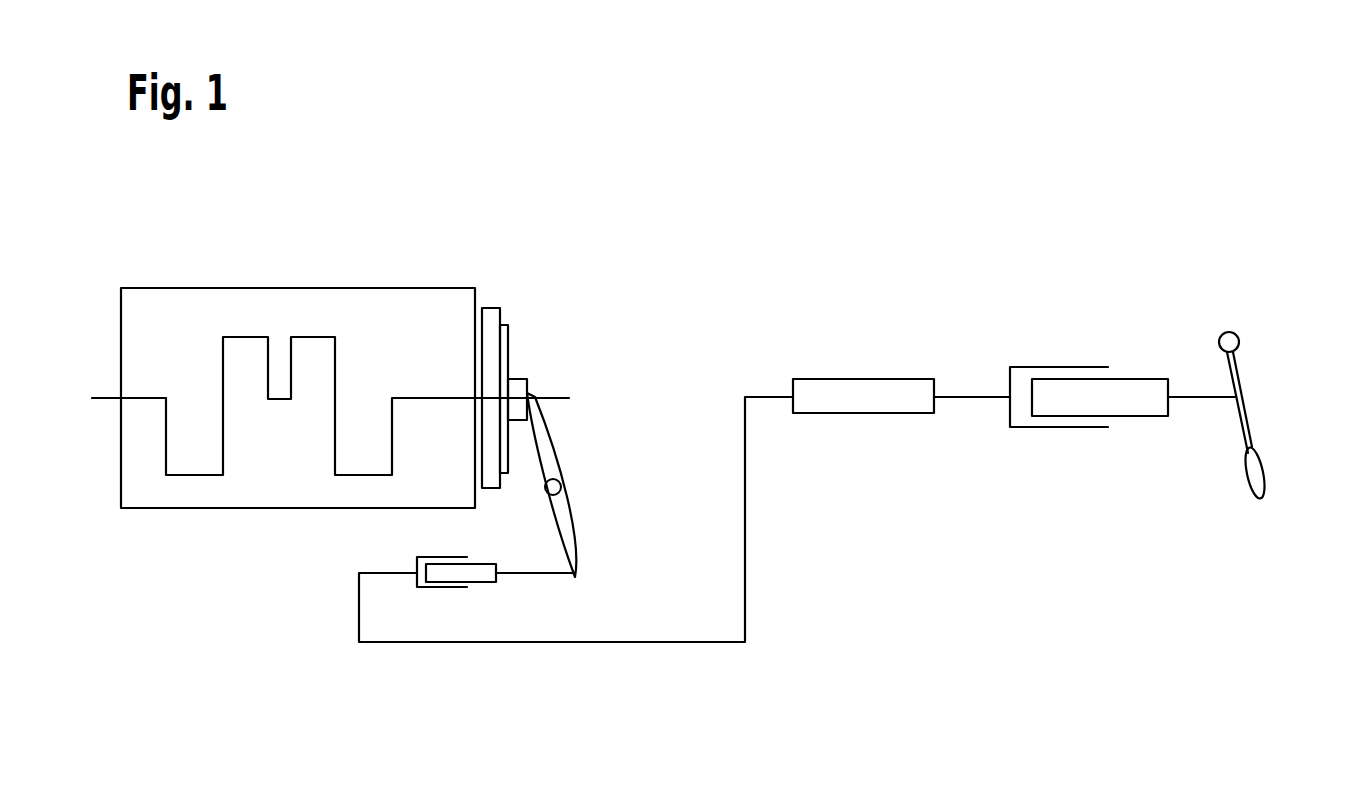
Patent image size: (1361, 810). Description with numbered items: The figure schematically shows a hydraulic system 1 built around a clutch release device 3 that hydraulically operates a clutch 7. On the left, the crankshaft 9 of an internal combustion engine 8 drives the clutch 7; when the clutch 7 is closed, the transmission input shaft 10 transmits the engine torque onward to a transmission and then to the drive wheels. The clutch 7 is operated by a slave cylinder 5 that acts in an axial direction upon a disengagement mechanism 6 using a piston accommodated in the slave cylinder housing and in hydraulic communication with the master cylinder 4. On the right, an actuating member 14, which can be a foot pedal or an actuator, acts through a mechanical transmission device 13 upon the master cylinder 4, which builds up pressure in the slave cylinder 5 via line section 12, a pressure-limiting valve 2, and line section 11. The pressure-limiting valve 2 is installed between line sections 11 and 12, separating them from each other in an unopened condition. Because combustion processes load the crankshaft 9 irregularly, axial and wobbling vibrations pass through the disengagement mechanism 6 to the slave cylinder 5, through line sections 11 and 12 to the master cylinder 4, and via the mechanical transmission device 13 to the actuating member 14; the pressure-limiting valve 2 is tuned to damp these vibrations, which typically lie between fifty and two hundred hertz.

The actuating device 1 is at (680, 710).
The pressure-limiting valve 2 is at (865, 390).
The clutch release device 3 is at (1302, 397).
The master cylinder 4 is at (1080, 427).
The slave cylinder 5 is at (452, 612).
The disengagement mechanism 6 is at (563, 522).
The clutch 7 is at (490, 312).
The internal combustion engine 8 is at (385, 313).
The crankshaft 9 is at (223, 395).
The transmission input shaft 10 is at (543, 395).
The line section 11 is at (745, 497).
The line section 12 is at (970, 397).
The mechanical transmission device 13 is at (1183, 397).
The actuating member 14 is at (1238, 378).